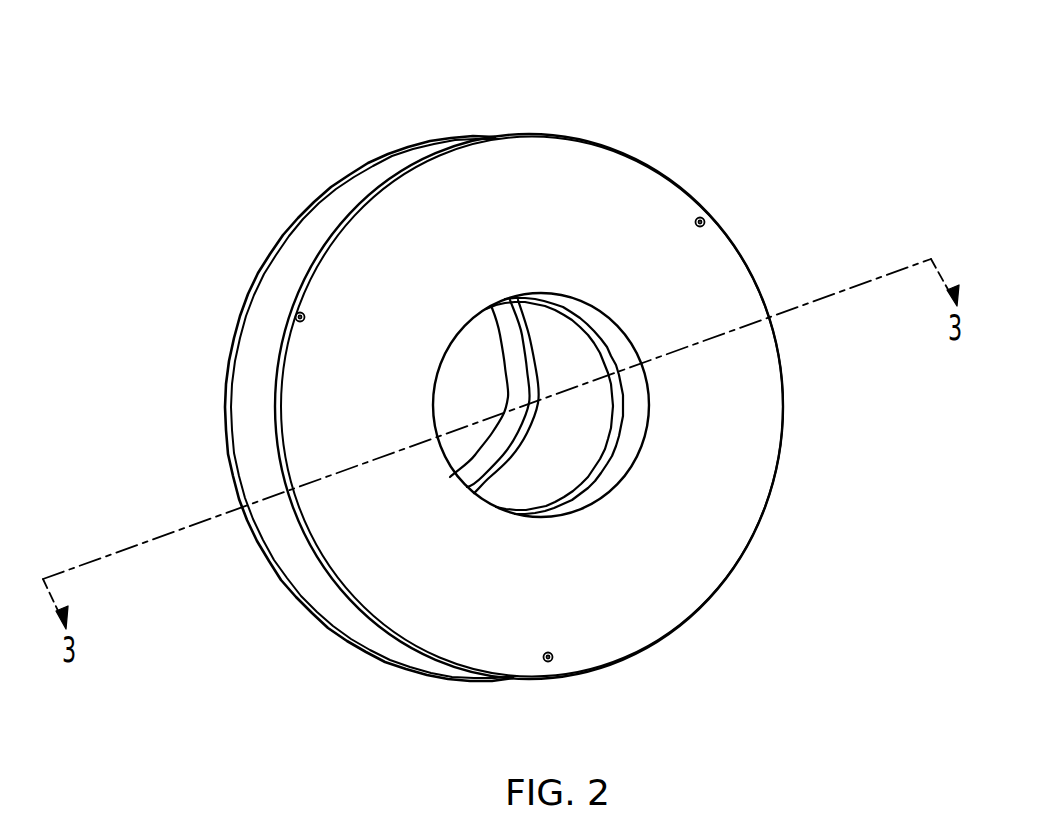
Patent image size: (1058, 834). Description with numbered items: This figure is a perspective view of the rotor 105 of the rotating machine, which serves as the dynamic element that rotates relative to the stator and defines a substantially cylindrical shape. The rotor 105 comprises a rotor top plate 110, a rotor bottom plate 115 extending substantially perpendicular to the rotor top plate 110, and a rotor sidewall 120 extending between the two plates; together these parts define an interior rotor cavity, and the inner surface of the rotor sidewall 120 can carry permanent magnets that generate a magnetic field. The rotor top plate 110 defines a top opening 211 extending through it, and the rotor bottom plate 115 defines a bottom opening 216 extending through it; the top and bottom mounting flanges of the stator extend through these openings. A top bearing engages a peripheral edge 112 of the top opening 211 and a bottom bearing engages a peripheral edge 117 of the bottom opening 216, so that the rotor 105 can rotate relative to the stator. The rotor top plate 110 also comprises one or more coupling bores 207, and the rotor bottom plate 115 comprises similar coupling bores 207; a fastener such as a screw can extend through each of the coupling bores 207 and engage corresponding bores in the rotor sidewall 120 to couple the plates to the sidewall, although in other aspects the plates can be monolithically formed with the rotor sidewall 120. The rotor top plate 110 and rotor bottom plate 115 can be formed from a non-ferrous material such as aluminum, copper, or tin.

The rotor 105 is at (675, 97).
The rotor top plate 110 is at (740, 495).
The peripheral edge 112 is at (637, 412).
The rotor bottom plate 115 is at (517, 371).
The peripheral edge 117 is at (507, 433).
The rotor sidewall 120 is at (345, 617).
The coupling bores 207 is at (293, 319).
The top opening 211 is at (638, 363).
The bottom opening 216 is at (503, 400).